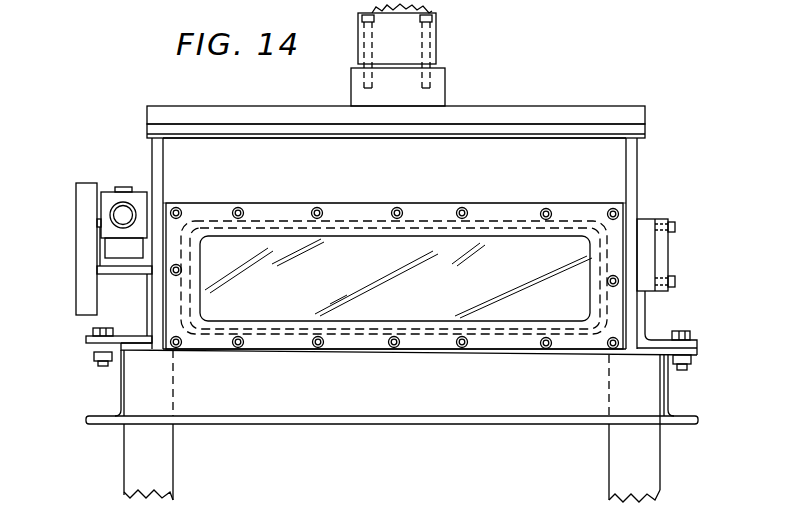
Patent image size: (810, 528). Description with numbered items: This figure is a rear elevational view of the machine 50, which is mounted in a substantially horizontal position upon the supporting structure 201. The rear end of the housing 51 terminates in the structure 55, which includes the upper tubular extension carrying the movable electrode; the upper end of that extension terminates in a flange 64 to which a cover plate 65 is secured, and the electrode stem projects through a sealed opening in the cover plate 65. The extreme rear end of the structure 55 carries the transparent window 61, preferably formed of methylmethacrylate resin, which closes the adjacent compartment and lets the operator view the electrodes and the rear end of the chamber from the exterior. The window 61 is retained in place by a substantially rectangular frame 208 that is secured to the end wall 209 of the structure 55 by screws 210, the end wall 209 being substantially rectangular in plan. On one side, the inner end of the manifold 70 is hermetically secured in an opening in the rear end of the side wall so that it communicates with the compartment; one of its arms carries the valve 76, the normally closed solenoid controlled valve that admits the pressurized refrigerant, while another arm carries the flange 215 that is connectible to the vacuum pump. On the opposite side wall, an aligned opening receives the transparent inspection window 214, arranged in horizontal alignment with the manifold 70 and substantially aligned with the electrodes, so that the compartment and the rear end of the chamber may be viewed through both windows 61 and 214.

The machine 50 is at (204, 92).
The housing 51 is at (640, 166).
The structure 55 is at (146, 148).
The transparent window 61 is at (354, 283).
The flange 64 is at (645, 134).
The cover plate 65 is at (645, 118).
The manifold 70 is at (123, 270).
The solenoid controlled valve 76 is at (140, 188).
The supporting structure 201 is at (432, 403).
The frame 208 is at (299, 203).
The end wall 209 is at (485, 154).
The screws 210 is at (462, 208).
The inspection window 214 is at (665, 237).
The flange 215 is at (87, 269).